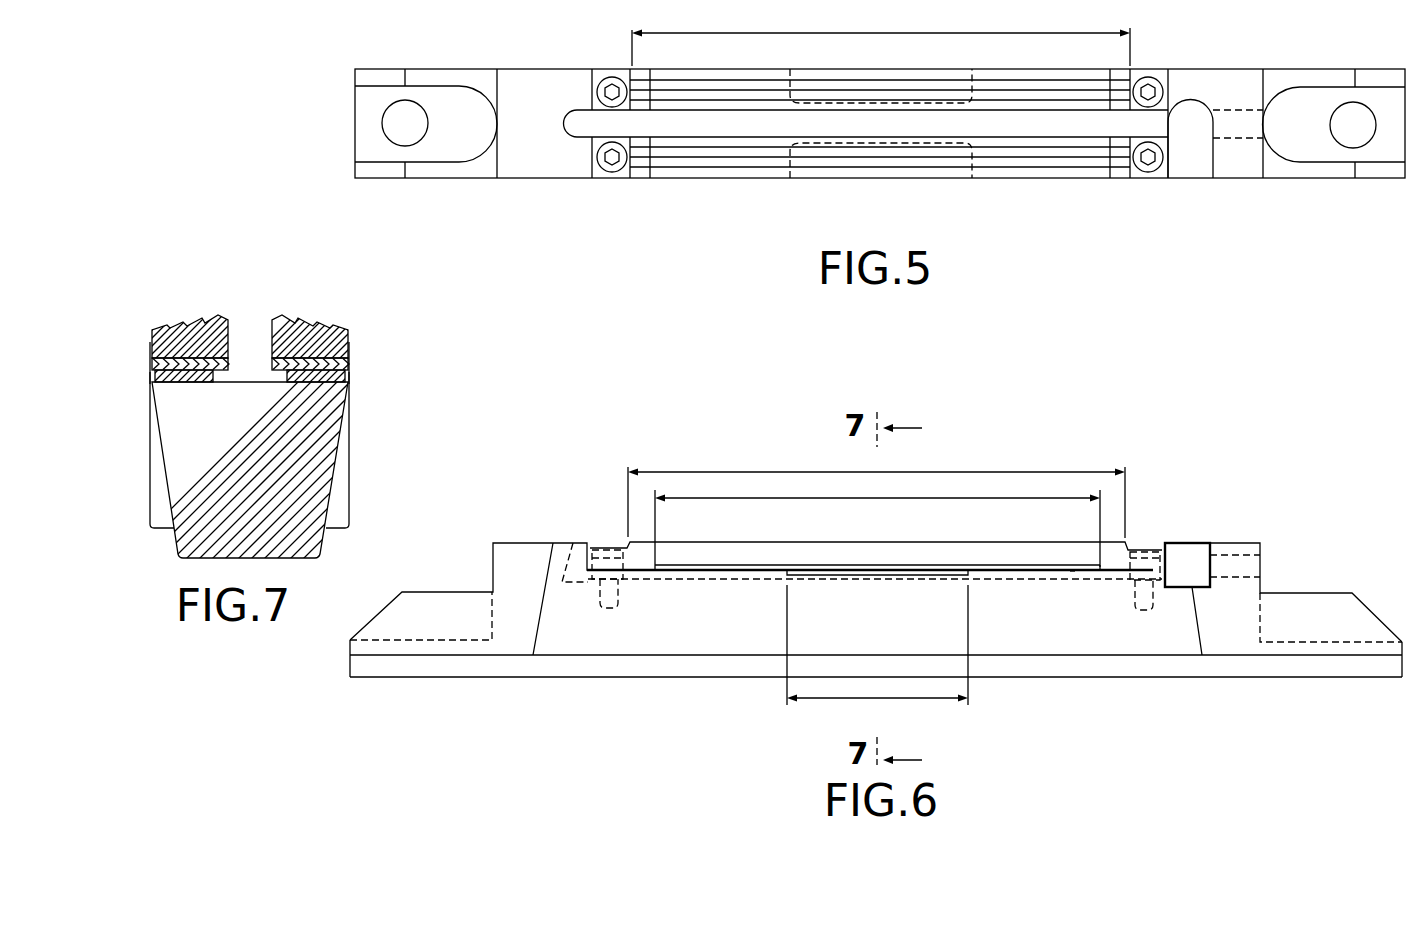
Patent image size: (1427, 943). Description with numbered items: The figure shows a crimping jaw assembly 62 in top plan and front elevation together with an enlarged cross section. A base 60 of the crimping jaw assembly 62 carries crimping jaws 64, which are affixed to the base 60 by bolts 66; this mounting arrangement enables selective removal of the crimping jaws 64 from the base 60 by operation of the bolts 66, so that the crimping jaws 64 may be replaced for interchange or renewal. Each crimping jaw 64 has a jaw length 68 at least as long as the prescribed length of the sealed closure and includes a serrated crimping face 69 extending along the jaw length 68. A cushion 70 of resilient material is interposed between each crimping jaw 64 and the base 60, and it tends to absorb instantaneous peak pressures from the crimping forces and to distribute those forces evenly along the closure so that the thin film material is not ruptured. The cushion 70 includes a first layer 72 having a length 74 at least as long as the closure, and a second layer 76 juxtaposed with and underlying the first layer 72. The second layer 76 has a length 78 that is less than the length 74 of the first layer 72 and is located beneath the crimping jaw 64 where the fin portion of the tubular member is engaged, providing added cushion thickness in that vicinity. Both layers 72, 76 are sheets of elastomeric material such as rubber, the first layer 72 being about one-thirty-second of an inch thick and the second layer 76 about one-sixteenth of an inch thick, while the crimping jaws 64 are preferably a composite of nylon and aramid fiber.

In FIG. 5, the base 60 is at (446, 170).
In FIG. 6, the base 60 is at (458, 667).
In FIG. 7, the base 60 is at (192, 453).
In FIG. 5, the crimping jaw assembly 62 is at (530, 67).
In FIG. 6, the crimping jaw assembly 62 is at (570, 680).
In FIG. 7, the crimping jaw assembly 62 is at (145, 508).
In FIG. 5, the crimping jaw 64 is at (717, 69).
In FIG. 6, the crimping jaw 64 is at (968, 548).
In FIG. 7, the crimping jaw 64 is at (155, 332).
In FIG. 5, the bolt 66 is at (614, 80).
In FIG. 6, the bolt 66 is at (613, 548).
In FIG. 5, the jaw length 68 is at (897, 33).
In FIG. 6, the jaw length 68 is at (882, 470).
In FIG. 5, the serrated crimping face 69 is at (1013, 90).
In FIG. 6, the serrated crimping face 69 is at (1020, 540).
In FIG. 7, the serrated crimping face 69 is at (203, 320).
In FIG. 6, the cushion 70 is at (975, 580).
In FIG. 7, the cushion 70 is at (145, 378).
In FIG. 5, the first layer 72 is at (1080, 163).
In FIG. 6, the first layer 72 is at (1072, 572).
In FIG. 7, the first layer 72 is at (178, 362).
In FIG. 6, the length of first layer 74 is at (868, 497).
In FIG. 5, the second layer 76 is at (922, 163).
In FIG. 6, the second layer 76 is at (897, 572).
In FIG. 7, the second layer 76 is at (165, 378).
In FIG. 6, the length of second layer 78 is at (873, 698).